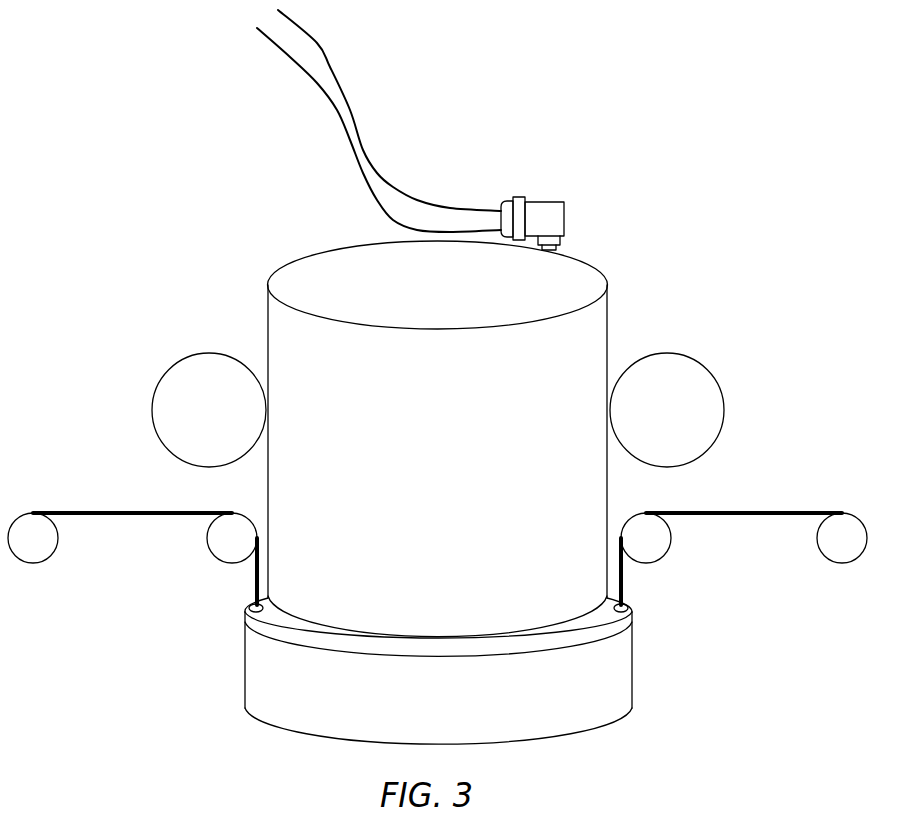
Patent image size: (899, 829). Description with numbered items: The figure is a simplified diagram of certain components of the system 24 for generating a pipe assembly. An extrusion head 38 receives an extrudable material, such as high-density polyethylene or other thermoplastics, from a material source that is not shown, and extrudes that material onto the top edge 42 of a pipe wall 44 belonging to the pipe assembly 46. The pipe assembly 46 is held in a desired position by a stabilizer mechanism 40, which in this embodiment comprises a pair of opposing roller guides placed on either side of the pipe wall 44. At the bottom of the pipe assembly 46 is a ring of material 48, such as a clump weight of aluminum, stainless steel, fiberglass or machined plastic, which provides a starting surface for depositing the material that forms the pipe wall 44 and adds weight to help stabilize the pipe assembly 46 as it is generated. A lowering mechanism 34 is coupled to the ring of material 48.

The system 24 is at (574, 71).
The extrusion head 38 is at (537, 224).
The top edge 42 is at (318, 246).
The pipe wall 44 is at (608, 320).
The pipe assembly 46 is at (411, 424).
The stabilizer mechanism 40 is at (200, 420).
The lowering mechanism 34 is at (83, 479).
The ring of material 48 is at (614, 673).